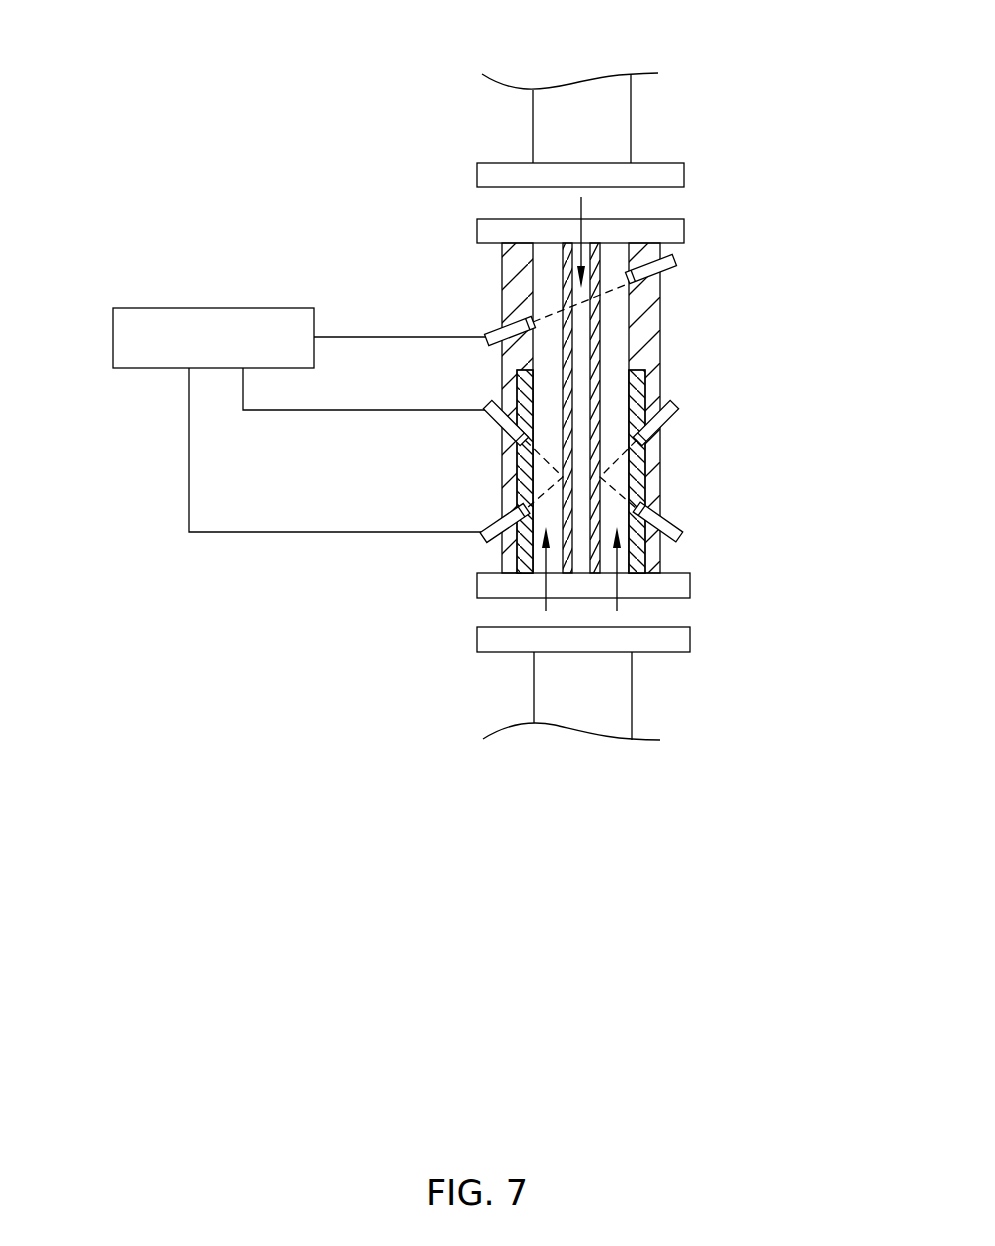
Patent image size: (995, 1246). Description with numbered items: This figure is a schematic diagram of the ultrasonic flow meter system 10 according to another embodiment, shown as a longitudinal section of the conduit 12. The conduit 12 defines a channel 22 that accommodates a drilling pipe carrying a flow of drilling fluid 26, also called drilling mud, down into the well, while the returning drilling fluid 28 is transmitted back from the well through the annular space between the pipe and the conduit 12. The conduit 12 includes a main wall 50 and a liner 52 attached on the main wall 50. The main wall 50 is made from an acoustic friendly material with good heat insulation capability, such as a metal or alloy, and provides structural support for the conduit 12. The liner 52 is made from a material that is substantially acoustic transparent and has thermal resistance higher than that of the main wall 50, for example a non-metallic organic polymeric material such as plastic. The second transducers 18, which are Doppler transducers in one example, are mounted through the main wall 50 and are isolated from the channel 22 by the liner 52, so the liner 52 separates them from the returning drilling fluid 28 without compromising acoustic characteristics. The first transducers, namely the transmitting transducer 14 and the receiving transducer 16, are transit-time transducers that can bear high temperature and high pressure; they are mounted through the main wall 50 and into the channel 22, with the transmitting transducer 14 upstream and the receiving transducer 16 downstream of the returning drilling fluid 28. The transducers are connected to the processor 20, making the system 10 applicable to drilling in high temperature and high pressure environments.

The ultrasonic flow meter system 10 is at (140, 65).
The conduit 12 is at (500, 552).
The transmitting transducer 14 is at (670, 275).
The receiving transducer 16 is at (497, 330).
The second transducers 18 is at (670, 422).
The processor 20 is at (212, 308).
The channel 22 is at (550, 278).
The drilling fluid 26 is at (581, 201).
The returning drilling fluid 28 is at (728, 622).
The main wall 50 is at (647, 337).
The liner 52 is at (638, 537).